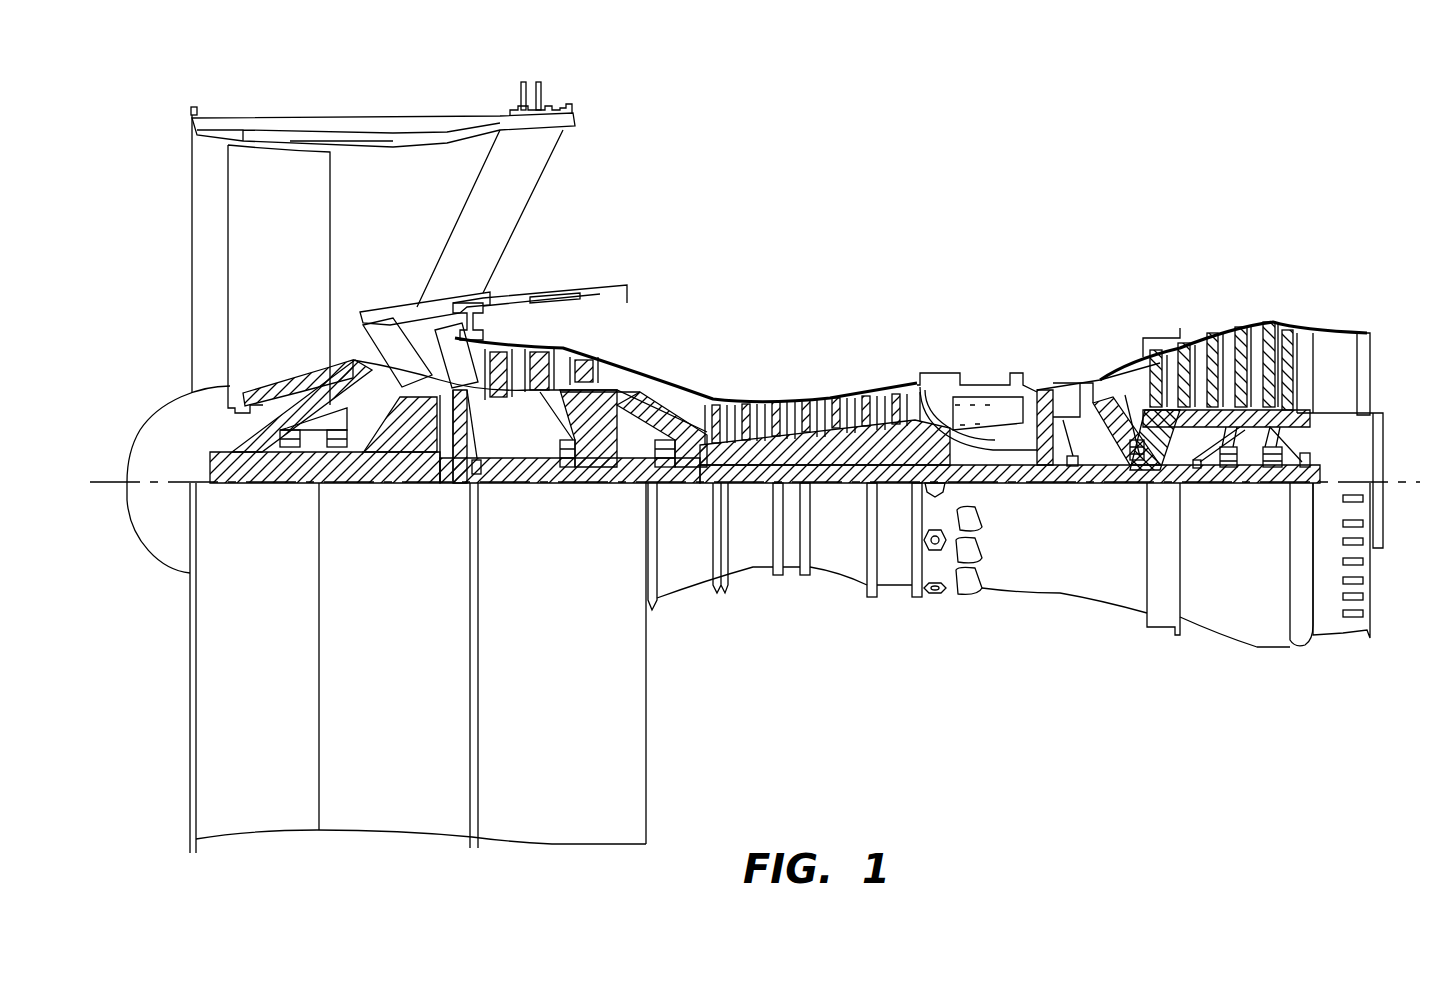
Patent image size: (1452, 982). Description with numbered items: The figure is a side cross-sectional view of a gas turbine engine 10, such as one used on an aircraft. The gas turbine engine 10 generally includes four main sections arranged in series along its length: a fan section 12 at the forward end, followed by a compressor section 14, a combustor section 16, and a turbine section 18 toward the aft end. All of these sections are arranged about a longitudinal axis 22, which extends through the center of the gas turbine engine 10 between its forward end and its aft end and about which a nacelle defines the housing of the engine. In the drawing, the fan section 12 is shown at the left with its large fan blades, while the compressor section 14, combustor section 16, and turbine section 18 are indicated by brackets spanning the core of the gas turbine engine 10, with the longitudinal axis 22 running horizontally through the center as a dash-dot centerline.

The gas turbine engine 10 is at (1108, 176).
The fan section 12 is at (472, 93).
The compressor section 14 is at (483, 248).
The combustor section 16 is at (922, 248).
The turbine section 18 is at (1300, 248).
The longitudinal axis 22 is at (1407, 480).